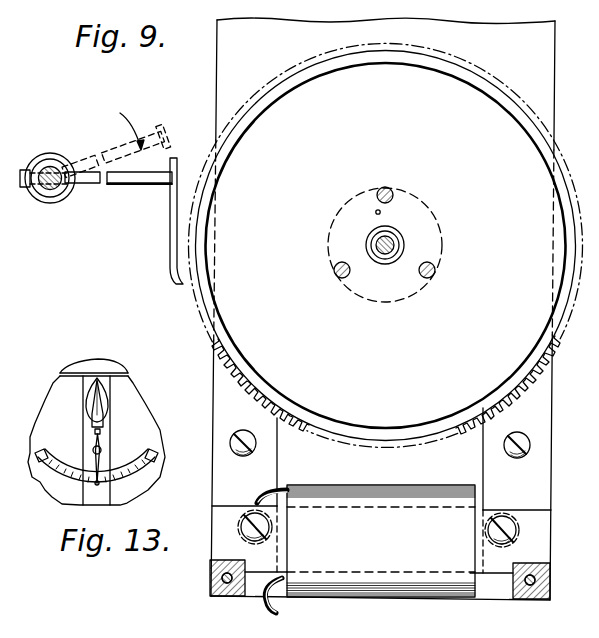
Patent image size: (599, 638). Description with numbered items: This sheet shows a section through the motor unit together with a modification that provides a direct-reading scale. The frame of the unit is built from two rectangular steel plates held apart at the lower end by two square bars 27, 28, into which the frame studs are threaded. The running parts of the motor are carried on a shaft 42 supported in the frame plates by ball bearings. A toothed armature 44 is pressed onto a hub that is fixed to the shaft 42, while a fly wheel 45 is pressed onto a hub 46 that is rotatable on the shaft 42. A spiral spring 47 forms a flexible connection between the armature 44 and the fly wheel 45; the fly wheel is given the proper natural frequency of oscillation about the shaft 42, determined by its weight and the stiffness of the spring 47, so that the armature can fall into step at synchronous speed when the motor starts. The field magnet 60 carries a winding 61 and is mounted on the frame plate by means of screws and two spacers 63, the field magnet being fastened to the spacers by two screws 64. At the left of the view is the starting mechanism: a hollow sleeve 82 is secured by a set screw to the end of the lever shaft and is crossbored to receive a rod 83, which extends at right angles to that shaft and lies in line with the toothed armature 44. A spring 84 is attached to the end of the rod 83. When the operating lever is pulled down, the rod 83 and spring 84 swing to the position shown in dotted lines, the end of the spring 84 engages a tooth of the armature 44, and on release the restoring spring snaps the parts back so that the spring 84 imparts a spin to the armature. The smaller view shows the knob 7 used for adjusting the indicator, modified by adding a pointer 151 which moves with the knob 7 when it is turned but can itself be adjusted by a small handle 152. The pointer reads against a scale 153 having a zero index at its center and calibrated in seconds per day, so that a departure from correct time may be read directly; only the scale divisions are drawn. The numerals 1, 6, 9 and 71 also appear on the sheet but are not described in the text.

In FIG. 9, the field magnet 60 is at (540, 467).
In FIG. 9, the fly wheel 45 is at (222, 300).
In FIG. 9, the toothed armature 44 is at (215, 342).
In FIG. 9, the hub 46 is at (398, 246).
In FIG. 9, the shaft 42 is at (393, 238).
In FIG. 9, the spiral spring 47 is at (376, 211).
In FIG. 9, the winding 61 is at (407, 590).
In FIG. 9, the spacers 63 is at (238, 528).
In FIG. 9, the screws 64 is at (252, 515).
In FIG. 9, the square bar 28 is at (215, 598).
In FIG. 9, the square bar 27 is at (532, 601).
In FIG. 9, the hollow sleeve 82 is at (51, 204).
In FIG. 9, the shaft 71 is at (46, 170).
In FIG. 9, the rod 83 is at (133, 186).
In FIG. 9, the spring 84 is at (170, 257).
In FIG. 13, the casing 1 is at (58, 388).
In FIG. 13, the cap 6 is at (100, 366).
In FIG. 13, the slot 9 is at (85, 495).
In FIG. 13, the knob 7 is at (88, 402).
In FIG. 13, the pointer 151 is at (101, 433).
In FIG. 13, the small handle 152 is at (102, 450).
In FIG. 13, the scale 153 is at (140, 473).